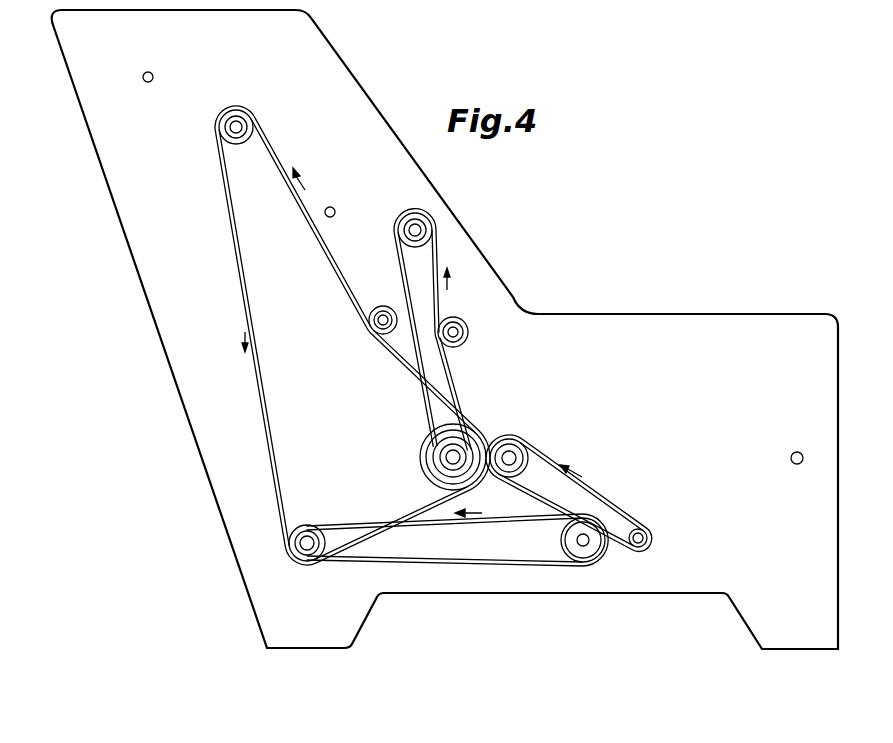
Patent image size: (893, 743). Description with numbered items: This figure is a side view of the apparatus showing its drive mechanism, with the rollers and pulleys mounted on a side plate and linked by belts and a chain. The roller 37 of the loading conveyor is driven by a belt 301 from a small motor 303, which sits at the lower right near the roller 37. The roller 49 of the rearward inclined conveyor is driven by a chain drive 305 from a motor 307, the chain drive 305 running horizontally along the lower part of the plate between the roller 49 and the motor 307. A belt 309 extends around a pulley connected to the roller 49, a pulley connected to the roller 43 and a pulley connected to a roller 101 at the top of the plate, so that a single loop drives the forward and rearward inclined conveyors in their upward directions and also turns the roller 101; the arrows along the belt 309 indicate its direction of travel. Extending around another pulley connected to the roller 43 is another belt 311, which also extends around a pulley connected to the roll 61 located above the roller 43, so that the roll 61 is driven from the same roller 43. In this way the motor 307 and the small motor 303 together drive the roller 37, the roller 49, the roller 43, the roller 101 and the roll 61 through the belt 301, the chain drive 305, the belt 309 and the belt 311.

The roller 101 is at (230, 110).
The belt 309 is at (237, 249).
The belt 311 is at (400, 272).
The roll 61 is at (428, 220).
The roller 37 is at (505, 452).
The belt 301 is at (590, 492).
The roller 43 is at (440, 459).
The roller 49 is at (308, 562).
The chain drive 305 is at (503, 567).
The motor 307 is at (585, 555).
The small motor 303 is at (650, 547).